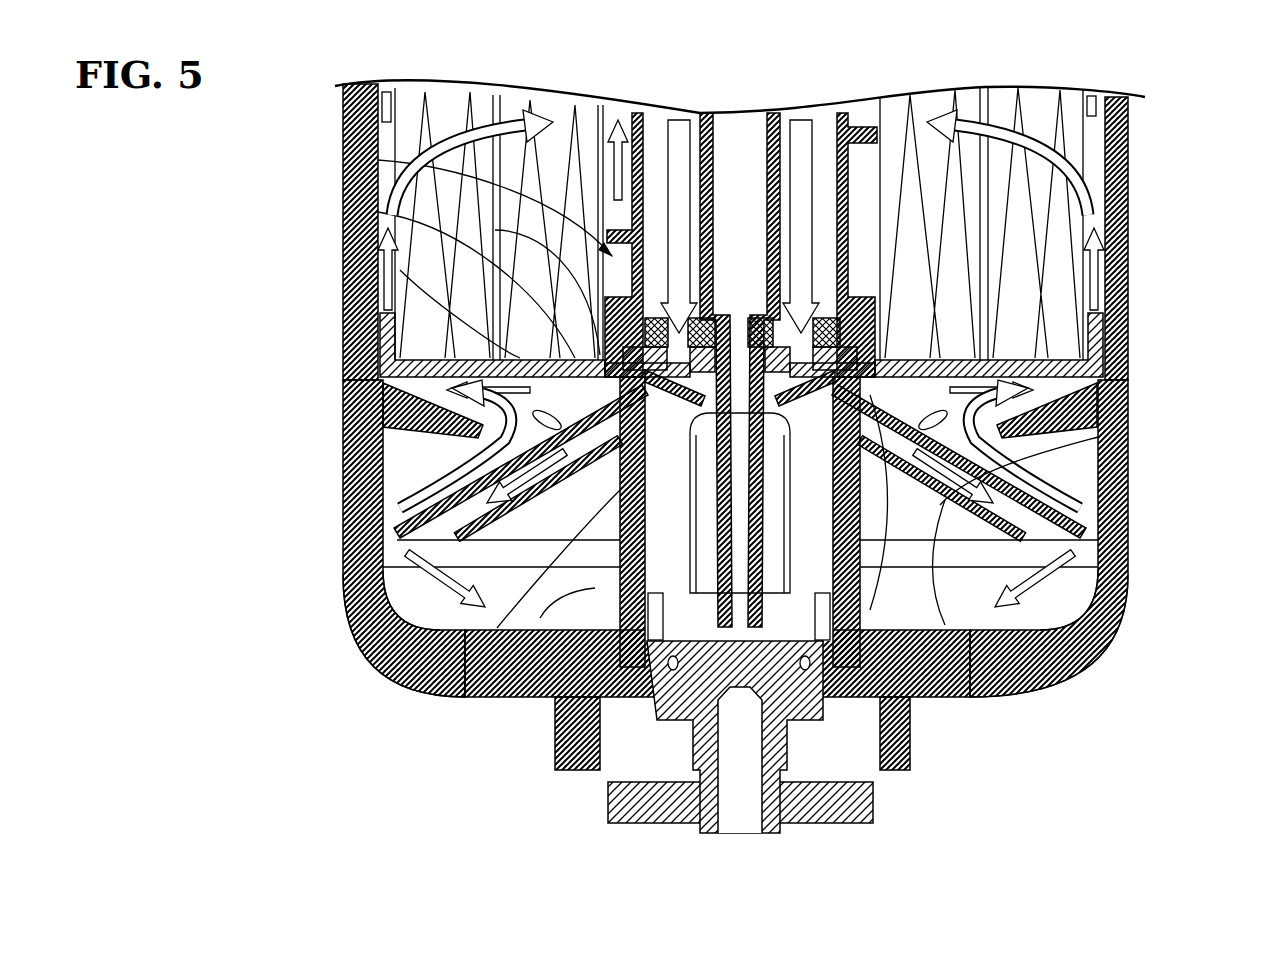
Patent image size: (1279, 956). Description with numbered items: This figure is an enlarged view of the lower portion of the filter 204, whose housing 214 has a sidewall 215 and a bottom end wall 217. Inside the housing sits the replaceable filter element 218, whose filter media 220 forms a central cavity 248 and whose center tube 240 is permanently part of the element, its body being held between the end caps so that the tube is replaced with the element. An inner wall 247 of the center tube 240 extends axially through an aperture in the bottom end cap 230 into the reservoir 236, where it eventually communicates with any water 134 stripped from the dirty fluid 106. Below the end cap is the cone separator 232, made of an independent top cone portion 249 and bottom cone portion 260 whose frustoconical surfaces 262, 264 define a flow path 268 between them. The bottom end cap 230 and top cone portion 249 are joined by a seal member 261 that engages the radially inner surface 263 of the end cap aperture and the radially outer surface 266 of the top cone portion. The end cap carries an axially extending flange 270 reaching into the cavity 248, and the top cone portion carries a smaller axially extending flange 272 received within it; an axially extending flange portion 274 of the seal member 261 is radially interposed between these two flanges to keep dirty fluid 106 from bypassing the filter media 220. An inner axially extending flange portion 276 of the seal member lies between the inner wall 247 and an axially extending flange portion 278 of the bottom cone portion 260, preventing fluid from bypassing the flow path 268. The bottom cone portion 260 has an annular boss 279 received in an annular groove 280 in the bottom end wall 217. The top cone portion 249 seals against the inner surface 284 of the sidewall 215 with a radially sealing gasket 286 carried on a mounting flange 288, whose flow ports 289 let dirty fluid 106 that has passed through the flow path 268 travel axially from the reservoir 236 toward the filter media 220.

The filter 204 is at (200, 238).
The filter housing 214 is at (1130, 163).
The sidewall 215 is at (350, 324).
The filter element 218 is at (343, 117).
The filter media 220 is at (1056, 116).
The center tube 240 is at (378, 158).
The dirty fluid 106 is at (378, 199).
The bottom end cap 230 is at (388, 280).
The axially extending flange 270 is at (515, 150).
The radially inner surface 263 is at (590, 160).
The cavity 248 is at (633, 125).
The axially extending flange 272 is at (658, 150).
The inner axially extending flange portion 276 is at (740, 240).
The seal member 261 is at (826, 250).
The inner wall 247 is at (858, 128).
The radially outer surface 266 is at (875, 335).
The axially extending flange portion 278 is at (865, 352).
The flow path 268 is at (885, 363).
The radially sealing gasket 286 is at (380, 393).
The top cone portion 249 is at (1100, 437).
The mounting flange 288 is at (383, 440).
The frustoconical surface 264 is at (1100, 468).
The inner surface 284 is at (345, 493).
The flow ports 289 is at (345, 540).
The frustoconical surface 262 is at (1100, 571).
The cone separator 232 is at (343, 617).
The water 134 is at (1095, 637).
The reservoir 236 is at (1030, 697).
The bottom end wall 217 is at (425, 690).
The axially extending flange portion 274 is at (487, 635).
The annular boss 279 is at (540, 618).
The annular groove 280 is at (927, 635).
The bottom cone portion 260 is at (960, 607).